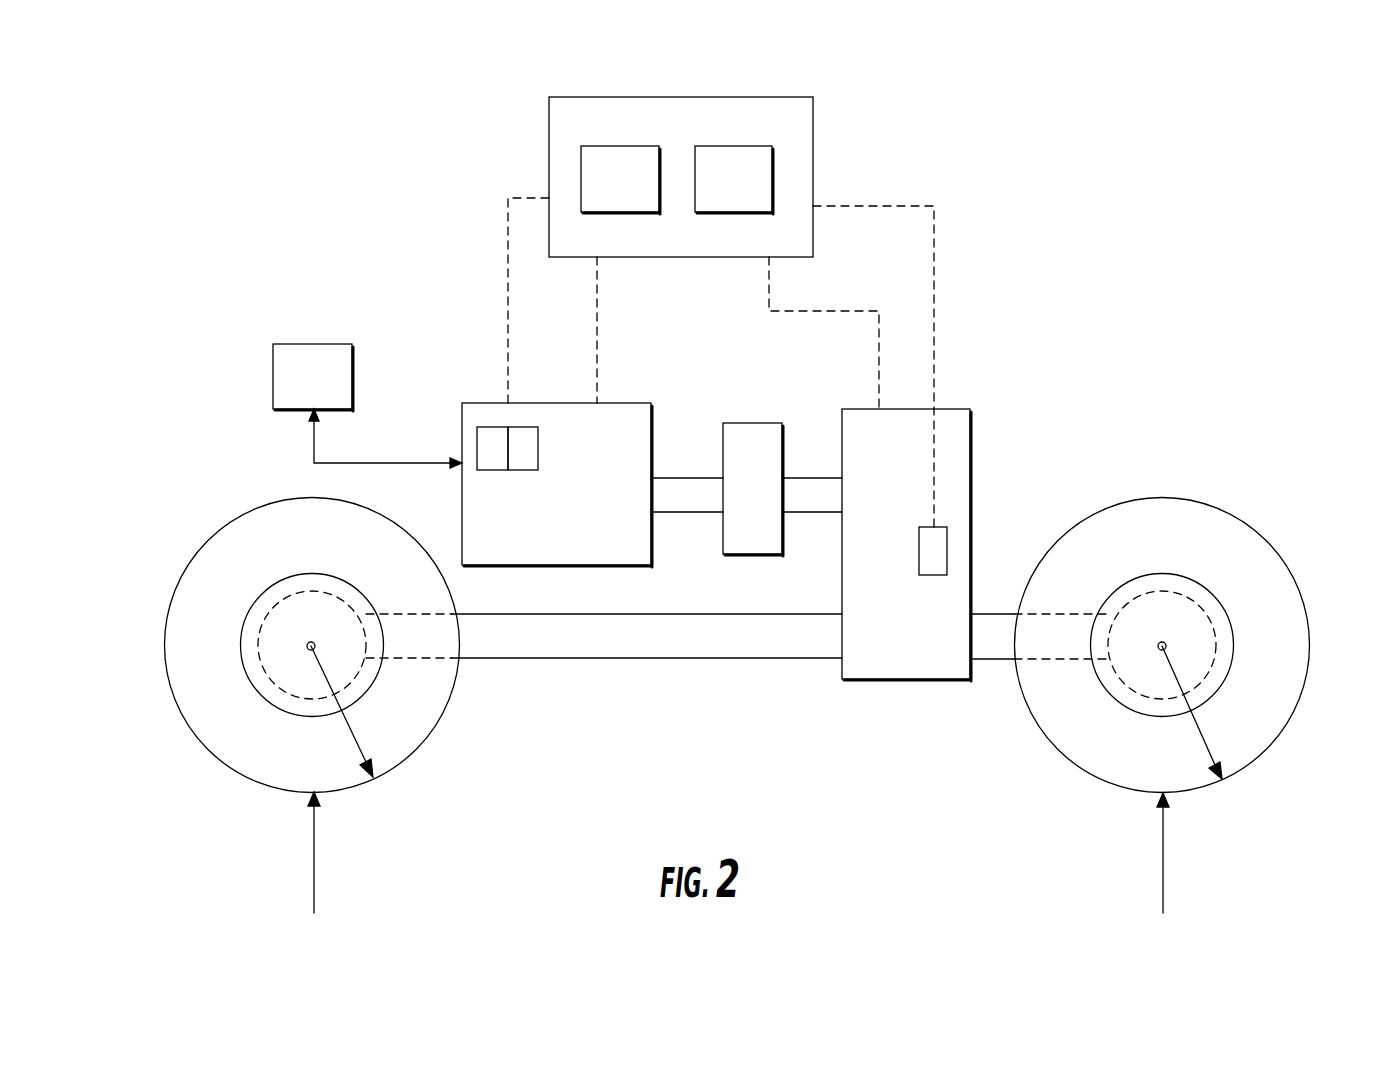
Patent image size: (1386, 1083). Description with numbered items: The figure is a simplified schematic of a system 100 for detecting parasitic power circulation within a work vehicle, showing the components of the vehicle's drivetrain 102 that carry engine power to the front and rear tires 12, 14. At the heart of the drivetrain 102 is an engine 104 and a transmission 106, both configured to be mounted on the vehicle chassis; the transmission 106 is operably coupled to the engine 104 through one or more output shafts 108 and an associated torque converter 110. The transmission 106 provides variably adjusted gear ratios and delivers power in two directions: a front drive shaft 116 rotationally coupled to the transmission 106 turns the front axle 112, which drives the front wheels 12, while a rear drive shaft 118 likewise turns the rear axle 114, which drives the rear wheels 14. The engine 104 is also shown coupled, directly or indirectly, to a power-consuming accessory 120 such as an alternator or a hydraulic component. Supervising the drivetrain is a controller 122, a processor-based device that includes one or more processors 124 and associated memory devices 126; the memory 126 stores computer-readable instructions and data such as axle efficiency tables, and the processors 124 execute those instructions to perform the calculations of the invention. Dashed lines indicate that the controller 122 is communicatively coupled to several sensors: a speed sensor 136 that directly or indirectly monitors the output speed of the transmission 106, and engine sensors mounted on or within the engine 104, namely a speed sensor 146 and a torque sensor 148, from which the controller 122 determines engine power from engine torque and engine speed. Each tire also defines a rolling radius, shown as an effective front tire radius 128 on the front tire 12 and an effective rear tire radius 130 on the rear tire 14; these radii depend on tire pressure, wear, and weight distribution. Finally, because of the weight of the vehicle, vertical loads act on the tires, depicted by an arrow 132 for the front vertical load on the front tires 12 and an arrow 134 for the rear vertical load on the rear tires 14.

The system 100 is at (202, 160).
The drivetrain 102 is at (1028, 330).
The engine 104 is at (570, 536).
The transmission 106 is at (886, 571).
The output shaft 108 is at (683, 478).
The torque converter 110 is at (766, 504).
The front axle 112 is at (1208, 613).
The rear axle 114 is at (267, 612).
The front drive shaft 116 is at (992, 648).
The rear drive shaft 118 is at (607, 650).
The power-consuming accessory 120 is at (332, 392).
The controller 122 is at (552, 88).
The processor 124 is at (640, 196).
The memory device 126 is at (755, 196).
The effective front tire radius 128 is at (1202, 727).
The effective rear tire radius 130 is at (347, 715).
The front vertical load arrow 132 is at (1163, 845).
The rear vertical load arrow 134 is at (310, 867).
The speed sensor 136 is at (947, 550).
The speed sensor 146 is at (493, 442).
The torque sensor 148 is at (523, 443).
The front tire 12 is at (1278, 592).
The rear tire 14 is at (197, 618).